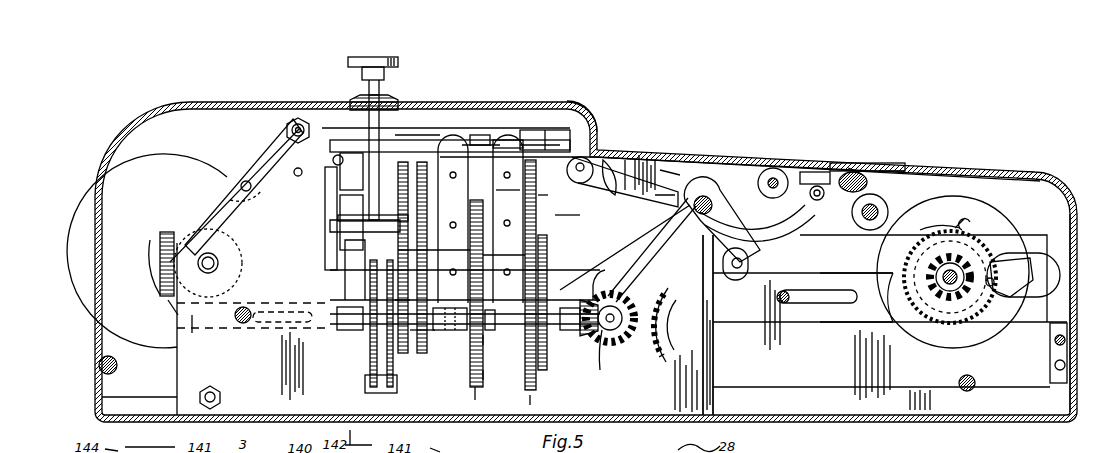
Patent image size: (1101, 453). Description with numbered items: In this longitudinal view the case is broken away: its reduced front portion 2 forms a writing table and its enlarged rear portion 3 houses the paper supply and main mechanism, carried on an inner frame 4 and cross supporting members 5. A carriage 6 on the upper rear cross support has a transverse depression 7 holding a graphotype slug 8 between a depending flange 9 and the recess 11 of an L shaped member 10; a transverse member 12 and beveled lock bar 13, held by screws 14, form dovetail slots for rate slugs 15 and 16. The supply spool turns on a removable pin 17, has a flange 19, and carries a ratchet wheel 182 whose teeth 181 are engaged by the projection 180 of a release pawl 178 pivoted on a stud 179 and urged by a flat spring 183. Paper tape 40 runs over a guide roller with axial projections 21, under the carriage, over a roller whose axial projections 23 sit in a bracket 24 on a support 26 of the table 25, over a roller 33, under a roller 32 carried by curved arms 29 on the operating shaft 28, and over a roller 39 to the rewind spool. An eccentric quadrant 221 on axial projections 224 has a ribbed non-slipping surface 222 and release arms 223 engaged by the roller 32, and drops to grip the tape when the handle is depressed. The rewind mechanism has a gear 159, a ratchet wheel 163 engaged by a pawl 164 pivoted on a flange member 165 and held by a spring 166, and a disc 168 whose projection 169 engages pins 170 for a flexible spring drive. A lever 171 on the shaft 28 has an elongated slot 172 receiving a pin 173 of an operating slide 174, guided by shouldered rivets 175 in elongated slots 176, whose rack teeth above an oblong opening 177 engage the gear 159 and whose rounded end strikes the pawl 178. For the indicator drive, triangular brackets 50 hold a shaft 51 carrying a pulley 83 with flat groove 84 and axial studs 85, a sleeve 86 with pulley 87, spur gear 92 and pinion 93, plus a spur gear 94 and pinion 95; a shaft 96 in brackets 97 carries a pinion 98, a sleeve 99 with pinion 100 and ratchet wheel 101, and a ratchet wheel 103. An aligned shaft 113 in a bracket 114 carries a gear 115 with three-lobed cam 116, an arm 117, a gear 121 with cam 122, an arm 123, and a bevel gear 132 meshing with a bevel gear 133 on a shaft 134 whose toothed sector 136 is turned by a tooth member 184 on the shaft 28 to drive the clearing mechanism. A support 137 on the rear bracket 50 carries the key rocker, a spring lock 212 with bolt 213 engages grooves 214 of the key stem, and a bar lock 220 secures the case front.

The reduced front portion 2 is at (710, 162).
The enlarged rear portion 3 is at (188, 103).
The inner frame 4 is at (715, 352).
The cross supporting member 5 is at (320, 118).
The carriage 6 is at (540, 140).
The transverse depression 7 is at (410, 142).
The graphotype slug 8 is at (399, 118).
The depending flange 9 is at (328, 150).
The L shaped member 10 is at (468, 142).
The recess 11 is at (445, 140).
The transverse member 12 is at (572, 112).
The lock bar 13 is at (515, 140).
The screws 14 is at (495, 136).
The rate slug 15 is at (493, 180).
The rate slug 16 is at (548, 130).
The removable pin 17 is at (218, 264).
The flange 19 is at (132, 290).
The axial projections 21 is at (296, 176).
The axial projections 23 is at (584, 163).
The bracket 24 is at (595, 183).
The table 25 is at (660, 165).
The support 26 is at (622, 160).
The operating shaft 28 is at (710, 198).
The arm 29 is at (790, 228).
The roller 32 is at (833, 163).
The roller 33 is at (775, 168).
The roller 39 is at (870, 240).
The paper tape 40 is at (605, 160).
The bracket 50 is at (338, 170).
The shaft 51 is at (575, 216).
The pulley 83 is at (523, 150).
The flat groove 84 is at (496, 190).
The axial studs 85 is at (516, 205).
The sleeve 86 is at (428, 225).
The pulley 87 is at (432, 330).
The spur gear 92 is at (425, 175).
The pinion 93 is at (486, 245).
The spur gear 94 is at (412, 253).
The pinion 95 is at (560, 242).
The shaft 96 is at (362, 330).
The brackets 97 is at (335, 328).
The pinion 98 is at (420, 360).
The sleeve 99 is at (372, 350).
The pinion 100 is at (410, 375).
The ratchet wheel 101 is at (400, 392).
The ratchet wheel 103 is at (372, 365).
The shaft 113 is at (495, 332).
The bracket 114 is at (548, 345).
The gear 115 is at (478, 395).
The three-lobed cam 116 is at (484, 375).
The arm 117 is at (484, 345).
The gear 121 is at (532, 395).
The three-lobed cam 122 is at (538, 365).
The arm 123 is at (585, 296).
The bevel gear 132 is at (596, 288).
The bevel gear 133 is at (605, 348).
The shaft 134 is at (630, 318).
The toothed sector 136 is at (665, 356).
The support 137 is at (338, 222).
The gear 159 is at (935, 280).
The ratchet wheel 163 is at (958, 322).
The pawl 164 is at (970, 222).
The flange member 165 is at (990, 230).
The spring 166 is at (938, 228).
The disc 168 is at (992, 287).
The projection 169 is at (995, 280).
The pins 170 is at (910, 300).
The lever 171 is at (735, 228).
The elongated slot 172 is at (748, 258).
The pin 173 is at (743, 264).
The operating slide 174 is at (198, 330).
The shouldered rivets 175 is at (243, 324).
The elongated slots 176 is at (832, 303).
The oblong opening 177 is at (1050, 326).
The release pawl 178 is at (176, 312).
The stud 179 is at (244, 191).
The projection 180 is at (180, 240).
The teeth 181 is at (160, 262).
The ratchet wheel 182 is at (160, 245).
The flat spring 183 is at (235, 180).
The tooth member 184 is at (658, 254).
The spring lock 212 is at (390, 95).
The bolt 213 is at (390, 70).
The circumferential grooves 214 is at (368, 102).
The bar lock 220 is at (1060, 378).
The eccentric quadrant 221 is at (853, 168).
The ribbed non-slipping surface 222 is at (868, 181).
The release arm 223 is at (818, 172).
The axial projection 224 is at (900, 168).